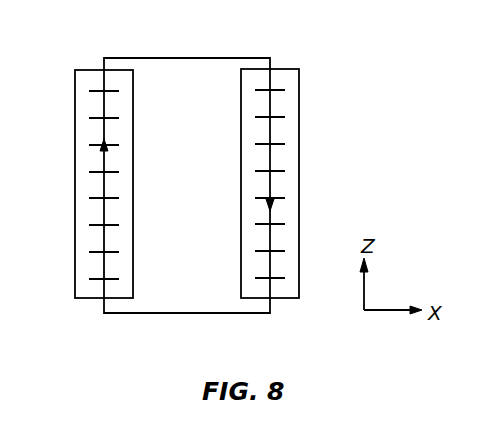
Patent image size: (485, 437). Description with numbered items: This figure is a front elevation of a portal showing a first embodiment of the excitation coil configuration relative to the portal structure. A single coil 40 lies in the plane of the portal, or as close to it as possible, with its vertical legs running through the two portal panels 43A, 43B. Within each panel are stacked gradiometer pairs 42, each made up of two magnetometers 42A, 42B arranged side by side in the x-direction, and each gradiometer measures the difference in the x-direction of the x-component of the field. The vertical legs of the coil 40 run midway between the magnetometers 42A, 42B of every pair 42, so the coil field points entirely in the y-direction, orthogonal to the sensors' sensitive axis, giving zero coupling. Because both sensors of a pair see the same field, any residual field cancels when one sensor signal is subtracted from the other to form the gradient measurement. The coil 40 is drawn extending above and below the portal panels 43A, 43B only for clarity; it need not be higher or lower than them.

The excitation coil 40 is at (243, 58).
The gradiometer pair 42 is at (93, 252).
The magnetometer 42A is at (256, 145).
The magnetometer 42B is at (285, 144).
The portal panel 43A is at (82, 298).
The portal panel 43B is at (286, 299).